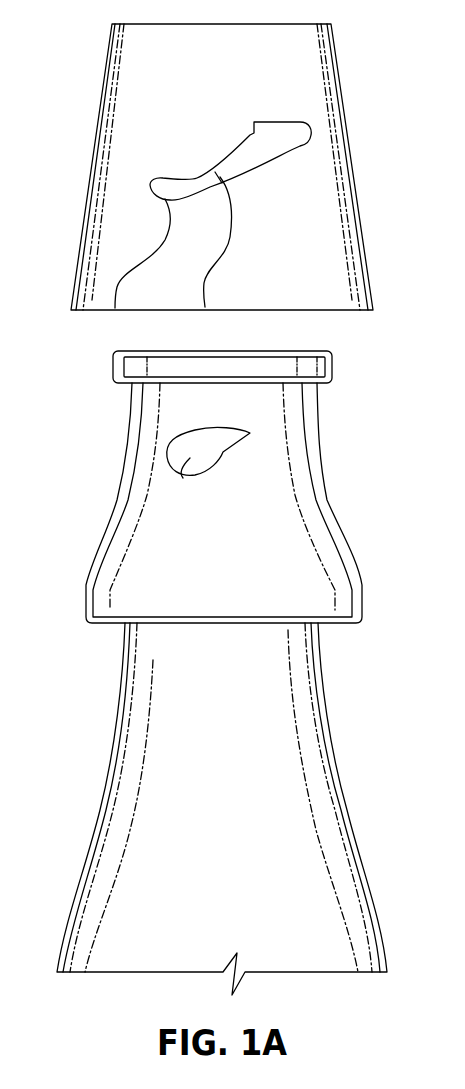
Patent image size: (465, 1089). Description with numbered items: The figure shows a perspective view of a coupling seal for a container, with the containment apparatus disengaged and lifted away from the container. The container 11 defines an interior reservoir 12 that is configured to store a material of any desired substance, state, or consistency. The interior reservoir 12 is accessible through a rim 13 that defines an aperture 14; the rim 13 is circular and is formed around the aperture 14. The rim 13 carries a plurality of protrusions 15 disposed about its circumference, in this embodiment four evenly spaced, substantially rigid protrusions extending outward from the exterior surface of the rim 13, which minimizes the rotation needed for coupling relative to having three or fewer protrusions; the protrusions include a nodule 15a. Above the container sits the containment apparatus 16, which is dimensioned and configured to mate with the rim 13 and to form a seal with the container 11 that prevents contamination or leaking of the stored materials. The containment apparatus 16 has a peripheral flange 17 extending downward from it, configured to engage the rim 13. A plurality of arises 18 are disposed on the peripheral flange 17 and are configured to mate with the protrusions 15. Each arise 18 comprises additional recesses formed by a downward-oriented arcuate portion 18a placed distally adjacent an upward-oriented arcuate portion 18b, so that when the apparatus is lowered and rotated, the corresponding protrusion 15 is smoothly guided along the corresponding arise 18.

The container 11 is at (118, 702).
The interior reservoir 12 is at (162, 810).
The rim 13 is at (120, 472).
The aperture 14 is at (330, 350).
The plurality of protrusions 15 is at (223, 454).
The nodule 15a is at (183, 478).
The containment apparatus 16 is at (127, 119).
The peripheral flange 17 is at (338, 70).
The plurality of arises 18 is at (160, 178).
The downward-oriented arcuate portion 18a is at (115, 308).
The upward-oriented arcuate portion 18b is at (205, 307).